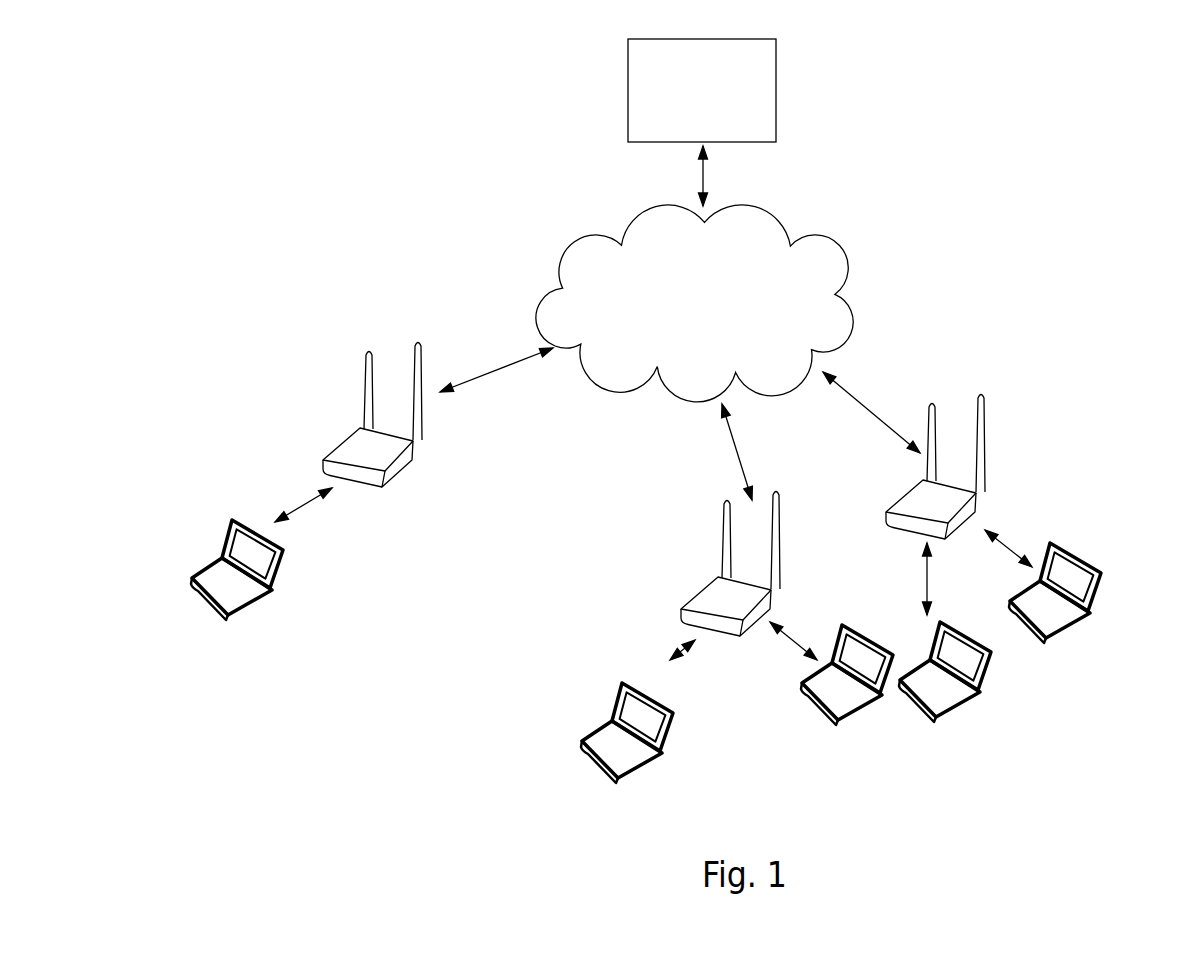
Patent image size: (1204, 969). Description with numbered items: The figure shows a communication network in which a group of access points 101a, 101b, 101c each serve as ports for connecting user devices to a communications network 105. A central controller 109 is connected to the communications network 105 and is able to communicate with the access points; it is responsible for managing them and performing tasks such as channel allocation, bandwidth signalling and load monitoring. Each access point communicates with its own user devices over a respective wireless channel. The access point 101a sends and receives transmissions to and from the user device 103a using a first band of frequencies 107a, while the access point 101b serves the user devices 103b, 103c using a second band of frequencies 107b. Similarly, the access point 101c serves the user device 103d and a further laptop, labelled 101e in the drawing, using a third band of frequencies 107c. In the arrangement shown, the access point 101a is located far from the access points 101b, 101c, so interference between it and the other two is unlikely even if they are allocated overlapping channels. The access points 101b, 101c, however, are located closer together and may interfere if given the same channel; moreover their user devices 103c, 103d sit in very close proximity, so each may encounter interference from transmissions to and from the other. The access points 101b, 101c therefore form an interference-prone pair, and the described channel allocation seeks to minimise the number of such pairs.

The central controller 109 is at (777, 94).
The communications network 105 is at (845, 292).
The access point 101a is at (410, 465).
The access point 101b is at (712, 533).
The access point 101c is at (993, 460).
The client device 101e is at (1098, 598).
The user device 103a is at (285, 570).
The user device 103b is at (675, 725).
The user device 103c is at (813, 715).
The user device 103d is at (990, 677).
The first band of frequencies 107a is at (310, 508).
The second band of frequencies 107b is at (778, 650).
The third band of frequencies 107c is at (1010, 558).